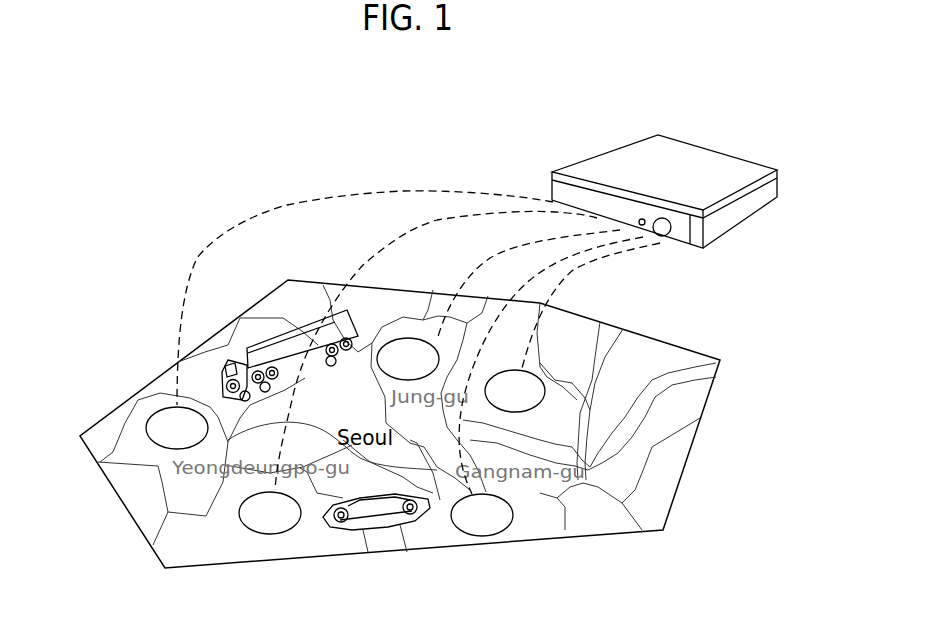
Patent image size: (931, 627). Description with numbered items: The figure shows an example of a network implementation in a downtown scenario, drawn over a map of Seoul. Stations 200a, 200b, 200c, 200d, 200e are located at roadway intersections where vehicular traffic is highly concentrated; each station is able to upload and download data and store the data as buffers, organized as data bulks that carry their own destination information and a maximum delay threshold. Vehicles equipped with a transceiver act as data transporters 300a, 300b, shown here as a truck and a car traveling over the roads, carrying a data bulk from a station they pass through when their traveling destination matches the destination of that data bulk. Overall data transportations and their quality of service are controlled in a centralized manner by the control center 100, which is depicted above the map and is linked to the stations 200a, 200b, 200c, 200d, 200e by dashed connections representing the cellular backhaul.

The control center 100 is at (737, 165).
The station 200a is at (414, 340).
The station 200b is at (530, 377).
The station 200c is at (481, 536).
The station 200d is at (270, 534).
The station 200e is at (157, 420).
The data transporter 300a is at (275, 345).
The data transporter 300b is at (382, 522).